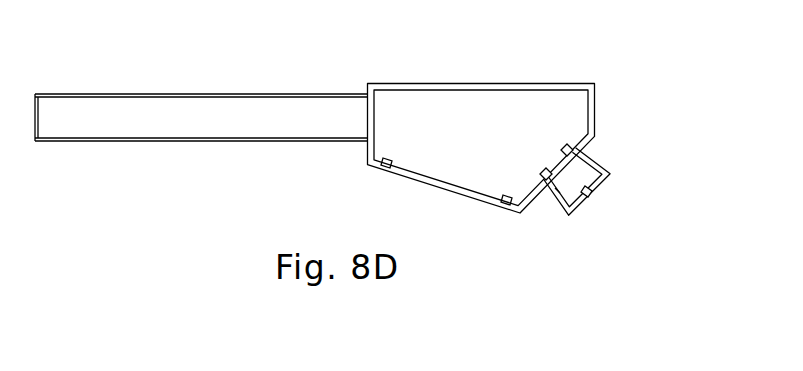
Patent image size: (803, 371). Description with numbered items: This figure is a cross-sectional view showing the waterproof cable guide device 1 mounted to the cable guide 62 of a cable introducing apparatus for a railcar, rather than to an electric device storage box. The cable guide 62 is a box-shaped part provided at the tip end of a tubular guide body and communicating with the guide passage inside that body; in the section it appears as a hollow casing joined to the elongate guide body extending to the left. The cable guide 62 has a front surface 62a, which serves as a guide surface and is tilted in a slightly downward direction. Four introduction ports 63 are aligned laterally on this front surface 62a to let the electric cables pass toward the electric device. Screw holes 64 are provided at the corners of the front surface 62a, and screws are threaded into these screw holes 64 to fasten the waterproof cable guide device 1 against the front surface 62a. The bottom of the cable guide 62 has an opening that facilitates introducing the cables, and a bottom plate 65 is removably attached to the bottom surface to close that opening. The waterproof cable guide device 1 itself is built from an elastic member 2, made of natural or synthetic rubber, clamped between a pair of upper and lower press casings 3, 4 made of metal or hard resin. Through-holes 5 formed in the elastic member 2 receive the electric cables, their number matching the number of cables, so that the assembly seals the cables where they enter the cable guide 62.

The waterproof cable guide device 1 is at (612, 164).
The elastic member 2 is at (550, 202).
The press casing 3 is at (606, 180).
The press casing 4 is at (570, 213).
The through-hole 5 is at (582, 201).
The cable guide 62 is at (430, 83).
The front surface 62a is at (587, 148).
The introduction port 63 is at (562, 150).
The screw hole 64 is at (565, 146).
The bottom plate 65 is at (395, 174).